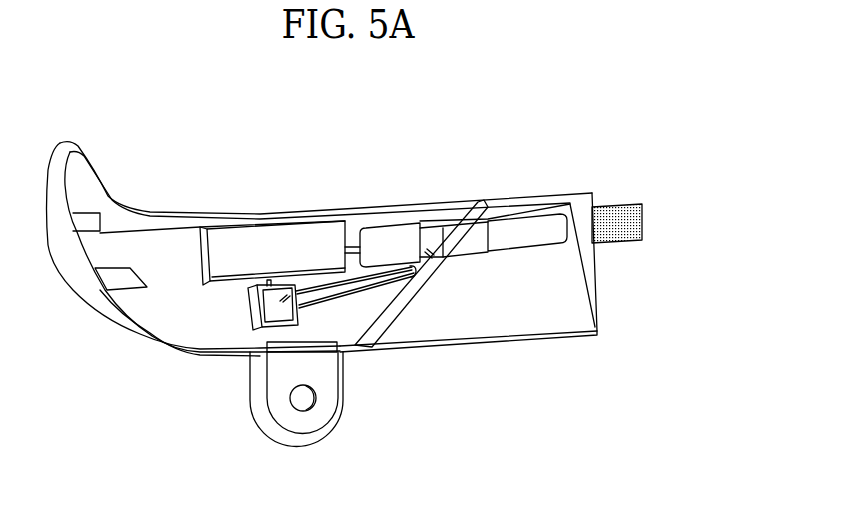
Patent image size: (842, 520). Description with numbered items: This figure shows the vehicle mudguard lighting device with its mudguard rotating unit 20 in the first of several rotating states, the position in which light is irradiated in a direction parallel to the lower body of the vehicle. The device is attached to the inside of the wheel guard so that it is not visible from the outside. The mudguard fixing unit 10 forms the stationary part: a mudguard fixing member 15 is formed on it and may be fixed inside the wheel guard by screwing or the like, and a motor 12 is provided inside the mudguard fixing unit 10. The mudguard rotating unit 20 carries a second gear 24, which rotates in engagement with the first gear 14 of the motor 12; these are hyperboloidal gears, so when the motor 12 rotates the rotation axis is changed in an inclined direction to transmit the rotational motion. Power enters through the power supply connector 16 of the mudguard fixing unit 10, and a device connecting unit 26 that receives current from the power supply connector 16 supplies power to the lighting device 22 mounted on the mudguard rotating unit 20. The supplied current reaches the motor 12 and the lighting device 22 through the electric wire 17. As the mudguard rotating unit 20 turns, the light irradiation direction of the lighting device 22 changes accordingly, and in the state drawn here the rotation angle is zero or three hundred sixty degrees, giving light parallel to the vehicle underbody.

The mudguard fixing unit 10 is at (142, 212).
The motor 12 is at (274, 238).
The first gear 14 is at (392, 235).
The mudguard fixing member 15 is at (320, 420).
The power supply connector 16 is at (255, 330).
The electric wire 17 is at (335, 296).
The mudguard rotating unit 20 is at (556, 338).
The lighting device 22 is at (520, 232).
The second gear 24 is at (430, 237).
The device connecting unit 26 is at (471, 242).